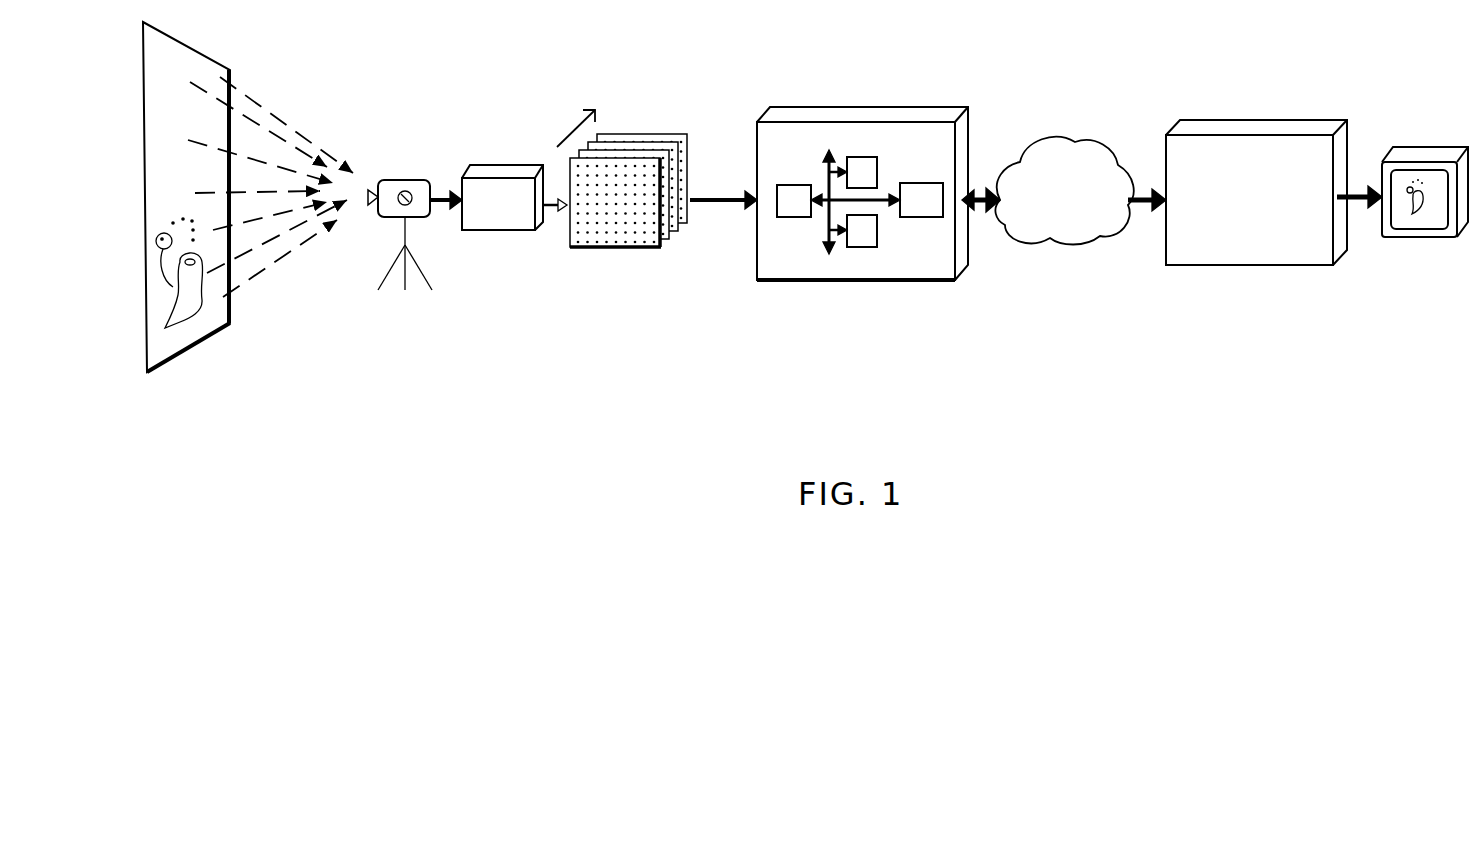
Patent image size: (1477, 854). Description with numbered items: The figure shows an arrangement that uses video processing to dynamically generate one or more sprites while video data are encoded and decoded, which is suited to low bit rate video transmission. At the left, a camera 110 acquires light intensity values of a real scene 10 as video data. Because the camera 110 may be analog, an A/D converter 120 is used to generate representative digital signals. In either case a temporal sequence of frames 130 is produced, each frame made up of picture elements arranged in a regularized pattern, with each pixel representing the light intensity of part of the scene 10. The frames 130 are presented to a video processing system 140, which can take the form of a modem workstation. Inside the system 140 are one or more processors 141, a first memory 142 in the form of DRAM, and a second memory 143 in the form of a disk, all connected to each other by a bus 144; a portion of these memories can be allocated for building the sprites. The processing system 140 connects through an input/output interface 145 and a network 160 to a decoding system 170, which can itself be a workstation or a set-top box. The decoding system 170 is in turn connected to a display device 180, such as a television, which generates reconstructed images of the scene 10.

The real scene 10 is at (195, 347).
The camera 110 is at (408, 290).
The A/D converter 120 is at (497, 230).
The frames 130 is at (615, 247).
The video processing system 140 is at (897, 204).
The processor 141 is at (800, 185).
The first memory (DRAM) 142 is at (863, 157).
The second memory (DISK) 143 is at (867, 247).
The bus 144 is at (828, 178).
The input/output interface (I/O) 145 is at (930, 183).
The network 160 is at (1062, 242).
The decoding system 170 is at (1237, 265).
The display device 180 is at (1425, 237).